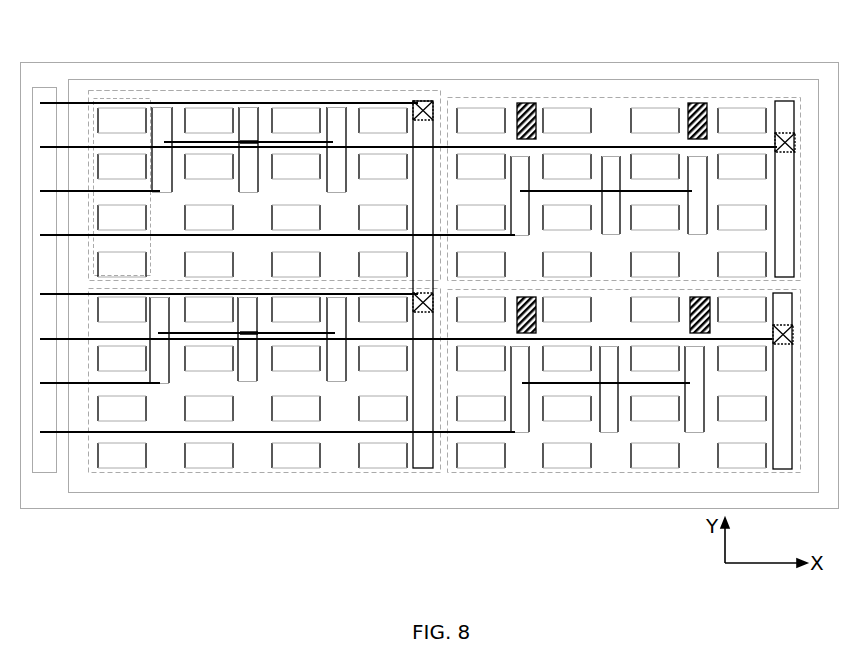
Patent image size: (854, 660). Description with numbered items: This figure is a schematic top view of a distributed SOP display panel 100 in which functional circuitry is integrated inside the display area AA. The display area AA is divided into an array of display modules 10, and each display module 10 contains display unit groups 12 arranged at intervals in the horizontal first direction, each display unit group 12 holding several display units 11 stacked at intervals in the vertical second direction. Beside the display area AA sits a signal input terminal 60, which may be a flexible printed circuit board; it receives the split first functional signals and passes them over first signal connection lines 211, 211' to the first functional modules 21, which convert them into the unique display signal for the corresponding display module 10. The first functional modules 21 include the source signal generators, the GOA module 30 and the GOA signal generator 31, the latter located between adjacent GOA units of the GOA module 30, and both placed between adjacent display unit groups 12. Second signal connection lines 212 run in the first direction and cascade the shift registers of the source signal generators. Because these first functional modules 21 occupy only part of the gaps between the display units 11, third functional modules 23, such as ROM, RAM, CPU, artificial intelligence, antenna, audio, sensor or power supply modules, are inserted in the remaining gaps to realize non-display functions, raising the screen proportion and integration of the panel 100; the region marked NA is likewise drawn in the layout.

The distributed SOP display panel 100 is at (477, 62).
The display module 10 is at (189, 88).
The display unit 11 is at (372, 118).
The display unit group 12 is at (118, 97).
The first functional module 21 is at (250, 115).
The first signal connection line 211 is at (277, 507).
The second sub-signal line 211' is at (408, 178).
The second signal connection line 212 is at (537, 383).
The third functional module 23 is at (699, 107).
The GOA module 30 is at (423, 442).
The GOA signal generator 31 is at (785, 150).
The signal input terminal 60 is at (42, 455).
The display area AA is at (262, 480).
The non-display area NA is at (338, 499).